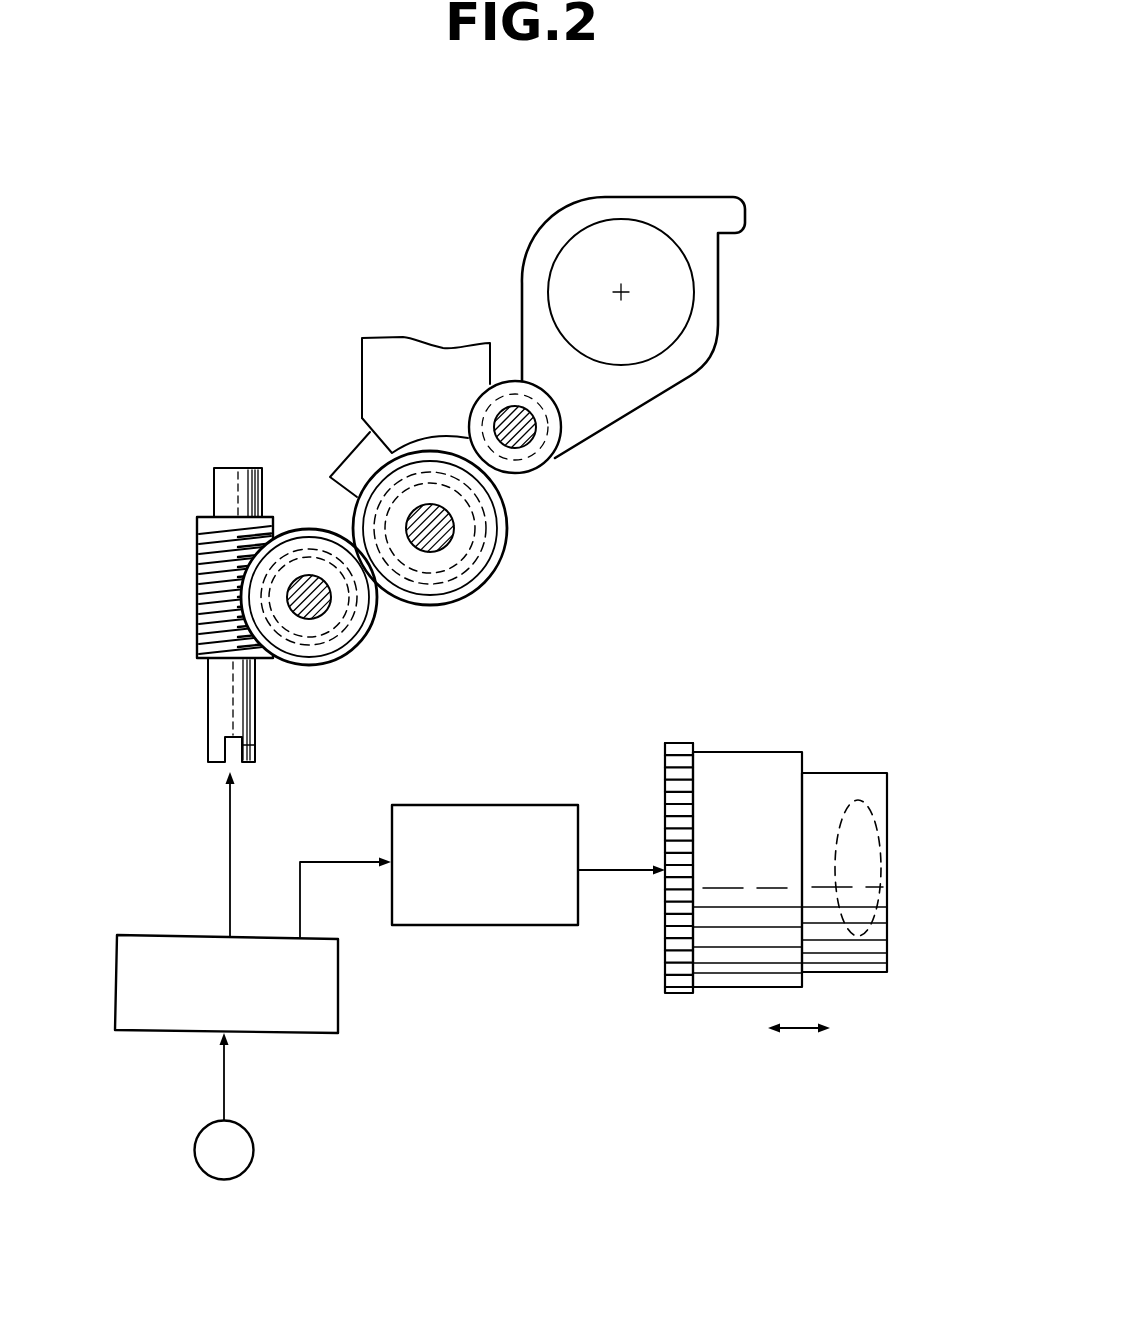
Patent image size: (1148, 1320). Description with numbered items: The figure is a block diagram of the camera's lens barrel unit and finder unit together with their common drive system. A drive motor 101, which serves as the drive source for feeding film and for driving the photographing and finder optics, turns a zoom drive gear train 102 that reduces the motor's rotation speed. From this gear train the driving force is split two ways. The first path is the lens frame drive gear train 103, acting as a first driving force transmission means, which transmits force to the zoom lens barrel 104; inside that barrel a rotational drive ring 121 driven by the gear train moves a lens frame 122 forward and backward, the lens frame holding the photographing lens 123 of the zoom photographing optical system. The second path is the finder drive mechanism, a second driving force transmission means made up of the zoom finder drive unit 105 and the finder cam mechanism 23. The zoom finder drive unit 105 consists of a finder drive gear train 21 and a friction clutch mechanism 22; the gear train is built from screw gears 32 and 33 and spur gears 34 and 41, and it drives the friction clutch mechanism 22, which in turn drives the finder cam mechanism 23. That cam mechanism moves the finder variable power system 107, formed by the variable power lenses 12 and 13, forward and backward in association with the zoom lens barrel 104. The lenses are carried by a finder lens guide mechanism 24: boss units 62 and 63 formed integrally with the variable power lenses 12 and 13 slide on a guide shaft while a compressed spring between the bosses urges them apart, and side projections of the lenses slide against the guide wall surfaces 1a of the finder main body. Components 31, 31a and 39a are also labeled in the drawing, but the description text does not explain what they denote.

The guide wall surfaces 1a is at (362, 368).
The variable power lens 12 is at (671, 342).
The variable power lens 13 is at (671, 342).
The finder drive gear train 21 is at (224, 621).
The friction clutch mechanism 22 is at (505, 547).
The finder cam mechanism 23 is at (505, 547).
The finder lens guide mechanism 24 is at (511, 372).
The shaft 31 is at (224, 621).
The slit 31a is at (188, 680).
The screw gear 32 is at (224, 621).
The screw gear 33 is at (368, 637).
The spur gear 34 is at (348, 622).
The stopper tab 39a is at (345, 452).
The spur gear 41 is at (545, 537).
The boss unit 62 is at (671, 342).
The boss unit 63 is at (620, 421).
The drive motor 101 is at (253, 1150).
The zoom drive gear train 102 is at (162, 935).
The lens frame drive gear train 103 is at (487, 805).
The zoom lens barrel 104 is at (810, 878).
The zoom finder drive unit 105 is at (168, 482).
The finder variable power system 107 is at (671, 342).
The rotational drive ring 121 is at (720, 987).
The lens frame 122 is at (850, 972).
The photographing lens 123 is at (883, 887).